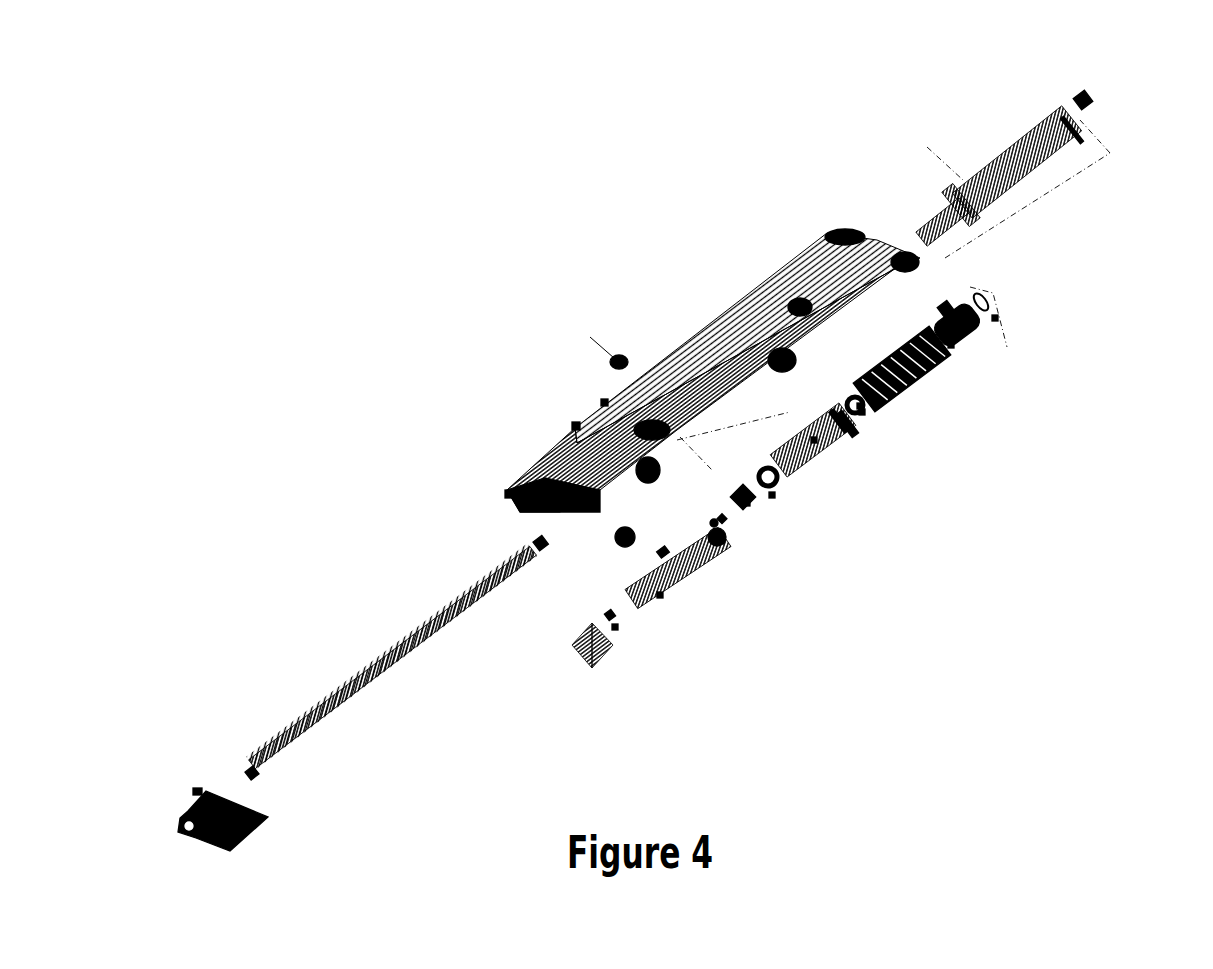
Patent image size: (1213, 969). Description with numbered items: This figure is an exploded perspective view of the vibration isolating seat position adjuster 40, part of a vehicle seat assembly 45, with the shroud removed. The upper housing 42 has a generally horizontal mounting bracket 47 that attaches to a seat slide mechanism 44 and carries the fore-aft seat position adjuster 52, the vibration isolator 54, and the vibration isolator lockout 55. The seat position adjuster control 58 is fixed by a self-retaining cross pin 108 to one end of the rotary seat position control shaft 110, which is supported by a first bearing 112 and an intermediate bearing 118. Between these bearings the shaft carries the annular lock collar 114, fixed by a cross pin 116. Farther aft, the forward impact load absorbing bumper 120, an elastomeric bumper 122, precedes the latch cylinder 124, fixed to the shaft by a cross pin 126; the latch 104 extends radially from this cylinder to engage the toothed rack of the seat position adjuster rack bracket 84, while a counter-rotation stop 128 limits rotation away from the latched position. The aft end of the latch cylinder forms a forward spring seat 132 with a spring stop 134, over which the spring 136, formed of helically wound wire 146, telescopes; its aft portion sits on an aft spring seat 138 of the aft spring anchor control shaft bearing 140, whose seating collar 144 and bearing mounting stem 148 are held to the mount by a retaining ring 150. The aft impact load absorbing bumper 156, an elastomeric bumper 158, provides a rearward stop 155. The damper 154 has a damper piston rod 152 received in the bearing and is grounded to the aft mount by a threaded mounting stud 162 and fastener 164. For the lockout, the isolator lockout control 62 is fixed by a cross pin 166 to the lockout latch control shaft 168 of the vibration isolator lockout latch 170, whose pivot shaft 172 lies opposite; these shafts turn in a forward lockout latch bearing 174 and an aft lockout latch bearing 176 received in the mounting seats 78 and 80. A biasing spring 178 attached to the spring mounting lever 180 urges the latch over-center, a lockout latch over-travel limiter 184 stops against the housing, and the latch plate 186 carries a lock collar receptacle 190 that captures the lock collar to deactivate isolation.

The vibration isolating seat position adjuster 40 is at (442, 382).
The upper housing 42 is at (713, 343).
The seat slide mechanism 44 is at (830, 232).
The vehicle seat assembly 45 is at (770, 198).
The mounting bracket 47 is at (710, 340).
The fore-aft seat position adjuster 52 is at (1061, 279).
The vibration isolator 54 is at (1062, 331).
The vibration isolator lockout 55 is at (682, 654).
The seat position adjuster control 58 is at (262, 818).
The isolator lockout control 62 is at (603, 662).
The vibration isolator mounting seat 78 is at (588, 523).
The vibration isolator mounting seat 80 is at (650, 465).
The seat position adjuster rack bracket 84 is at (790, 330).
The latch 104 is at (767, 457).
The self-retaining cross pin 108 is at (188, 722).
The seat position control shaft 110 is at (335, 703).
The first bearing 112 is at (535, 543).
The lock collar 114 is at (506, 494).
The self-retaining cross pin 116 is at (573, 420).
The intermediate bearing 118 is at (747, 505).
The forward impact load absorbing bumper 120 is at (772, 495).
The elastomeric bumper 122 is at (780, 477).
The latch cylinder 124 is at (814, 440).
The self-retaining cross pin 126 is at (660, 352).
The counter-rotation stop 128 is at (847, 418).
The forward spring seat 132 is at (846, 412).
The spring stop 134 is at (810, 427).
The spring 136 is at (869, 396).
The aft spring seat 138 is at (943, 325).
The aft spring anchor control shaft bearing 140 is at (951, 345).
The seating collar 144 is at (947, 313).
The wire 146 is at (925, 372).
The bearing mounting stem 148 is at (967, 297).
The retaining ring 150 is at (995, 318).
The damper piston rod 152 is at (940, 218).
The damper 154 is at (984, 132).
The rearward stop 155 is at (863, 413).
The aft impact load absorbing bumper 156 is at (862, 412).
The elastomeric bumper 158 is at (853, 395).
The threaded mounting stud 162 is at (1067, 120).
The fastener 164 is at (1092, 98).
The self-retaining cross pin 166 is at (580, 660).
The lockout latch control shaft 168 is at (612, 620).
The vibration isolator lockout latch 170 is at (660, 597).
The pivot shaft 172 is at (705, 535).
The forward lockout latch bearing 174 is at (615, 630).
The aft lockout latch bearing 176 is at (715, 530).
The biasing spring 178 is at (604, 402).
The spring mounting lever 180 is at (720, 545).
The lockout latch over-travel limiter 184 is at (710, 548).
The latch plate 186 is at (648, 570).
The lock collar receptacle 190 is at (665, 552).